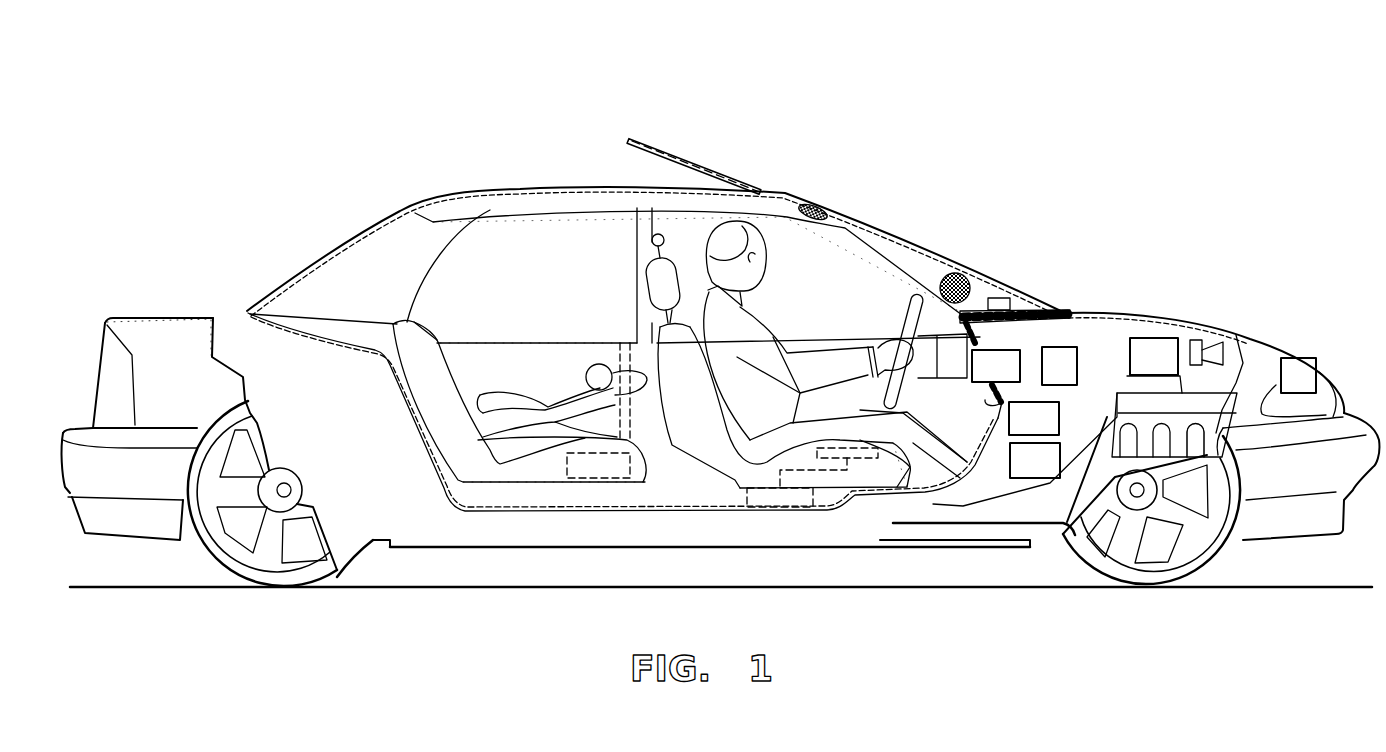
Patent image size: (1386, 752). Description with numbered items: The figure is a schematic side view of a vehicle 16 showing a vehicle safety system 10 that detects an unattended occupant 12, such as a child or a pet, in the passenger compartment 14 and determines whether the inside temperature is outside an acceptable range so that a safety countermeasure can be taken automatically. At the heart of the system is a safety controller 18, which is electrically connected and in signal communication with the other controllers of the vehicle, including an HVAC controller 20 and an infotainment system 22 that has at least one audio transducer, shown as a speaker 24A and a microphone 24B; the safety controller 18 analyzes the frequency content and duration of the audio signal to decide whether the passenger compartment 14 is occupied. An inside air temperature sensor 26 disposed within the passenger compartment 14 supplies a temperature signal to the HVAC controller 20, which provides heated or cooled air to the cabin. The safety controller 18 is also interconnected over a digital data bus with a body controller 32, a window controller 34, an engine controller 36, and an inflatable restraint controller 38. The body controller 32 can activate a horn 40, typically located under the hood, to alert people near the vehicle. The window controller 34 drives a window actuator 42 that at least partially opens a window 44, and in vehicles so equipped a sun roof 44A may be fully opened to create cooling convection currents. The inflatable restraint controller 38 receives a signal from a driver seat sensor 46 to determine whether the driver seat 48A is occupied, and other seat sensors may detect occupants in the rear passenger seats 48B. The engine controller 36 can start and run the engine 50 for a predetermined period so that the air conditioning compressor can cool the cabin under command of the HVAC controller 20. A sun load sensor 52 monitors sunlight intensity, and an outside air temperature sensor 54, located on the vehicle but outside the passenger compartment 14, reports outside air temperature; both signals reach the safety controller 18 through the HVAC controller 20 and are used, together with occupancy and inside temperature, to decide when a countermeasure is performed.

The vehicle safety system 10 is at (809, 128).
The occupant 12 is at (596, 390).
The passenger compartment 14 is at (590, 232).
The vehicle 16 is at (154, 326).
The safety controller 18 is at (1035, 460).
The HVAC controller 20 is at (1034, 418).
The infotainment system 22 is at (996, 366).
The speaker 24A is at (962, 277).
The microphone 24B is at (825, 203).
The inside air temperature sensor 26 is at (660, 232).
The body controller 32 is at (1059, 366).
The window controller 34 is at (593, 478).
The engine controller 36 is at (1154, 356).
The inflatable restraint controller 38 is at (770, 507).
The horn 40 is at (1208, 340).
The window actuator 42 is at (633, 440).
The window 44 is at (500, 228).
The sun roof 44A is at (704, 163).
The driver seat sensor 46 is at (858, 463).
The driver seat 48A is at (897, 475).
The rear passenger seat 48B is at (470, 479).
The engine 50 is at (1181, 428).
The sun load sensor 52 is at (1006, 298).
The outside air temperature sensor 54 is at (1293, 387).